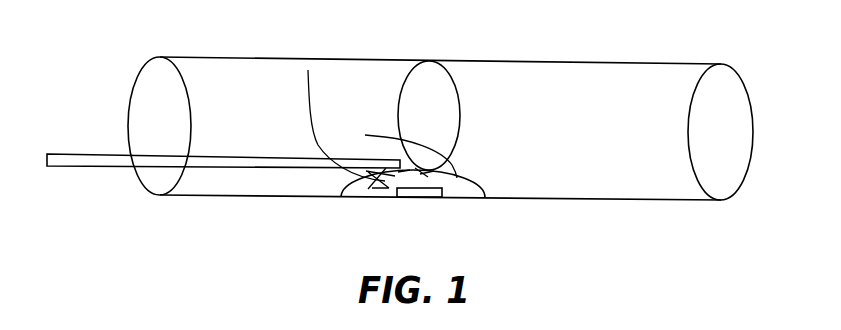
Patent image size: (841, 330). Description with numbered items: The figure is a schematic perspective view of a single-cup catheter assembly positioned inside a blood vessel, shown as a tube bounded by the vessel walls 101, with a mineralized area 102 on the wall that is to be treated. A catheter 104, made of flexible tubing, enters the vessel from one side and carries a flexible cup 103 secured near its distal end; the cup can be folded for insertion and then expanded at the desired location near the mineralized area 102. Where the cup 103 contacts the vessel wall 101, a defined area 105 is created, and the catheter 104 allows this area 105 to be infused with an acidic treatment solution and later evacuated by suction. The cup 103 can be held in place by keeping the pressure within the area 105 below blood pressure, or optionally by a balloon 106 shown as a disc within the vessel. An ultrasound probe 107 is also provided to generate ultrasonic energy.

The vessel wall 101 is at (450, 60).
The mineralized area 102 is at (396, 198).
The flexible cup 103 is at (365, 135).
The catheter 104 is at (93, 154).
The defined area 105 is at (342, 197).
The balloon 106 is at (460, 113).
The ultrasound probe 107 is at (308, 70).